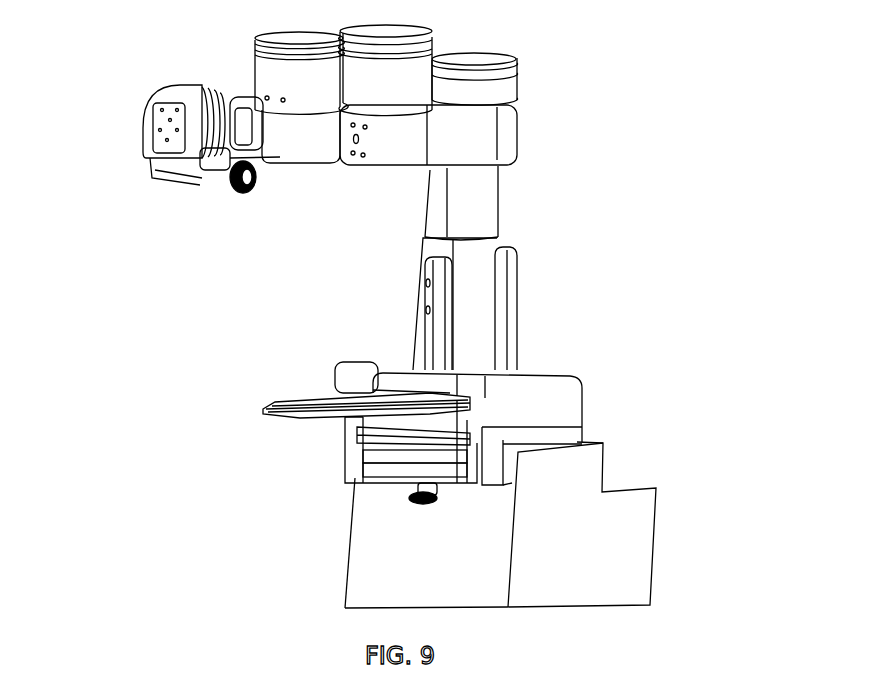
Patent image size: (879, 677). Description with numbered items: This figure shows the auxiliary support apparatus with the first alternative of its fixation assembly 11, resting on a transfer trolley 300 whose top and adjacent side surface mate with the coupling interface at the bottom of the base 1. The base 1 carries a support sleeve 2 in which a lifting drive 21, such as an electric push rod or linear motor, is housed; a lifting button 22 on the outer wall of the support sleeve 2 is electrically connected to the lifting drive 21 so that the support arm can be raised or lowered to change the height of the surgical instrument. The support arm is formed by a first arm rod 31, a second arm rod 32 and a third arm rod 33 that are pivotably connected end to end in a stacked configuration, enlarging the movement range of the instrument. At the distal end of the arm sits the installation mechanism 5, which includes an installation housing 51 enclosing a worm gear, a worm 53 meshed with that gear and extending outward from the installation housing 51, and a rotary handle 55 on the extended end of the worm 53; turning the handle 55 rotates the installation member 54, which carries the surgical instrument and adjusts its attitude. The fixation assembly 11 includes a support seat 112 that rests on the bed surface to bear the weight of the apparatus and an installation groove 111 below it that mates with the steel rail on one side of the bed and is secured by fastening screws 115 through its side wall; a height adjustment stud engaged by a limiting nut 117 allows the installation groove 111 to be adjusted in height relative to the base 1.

The base 1 is at (558, 410).
The support sleeve 2 is at (478, 305).
The installation mechanism 5 is at (122, 201).
The fixation assembly 11 is at (232, 438).
The lifting drive 21 is at (478, 195).
The lifting button 22 is at (425, 282).
The first arm rod 31 is at (455, 138).
The second arm rod 32 is at (397, 70).
The third arm rod 33 is at (247, 103).
The installation housing 51 is at (176, 99).
The worm 53 is at (217, 173).
The installation member 54 is at (160, 122).
The rotary handle 55 is at (236, 197).
The installation groove 111 is at (358, 460).
The support seat 112 is at (307, 410).
The fastening screws 115 is at (355, 485).
The limiting nut 117 is at (417, 502).
The transfer trolley 300 is at (637, 542).